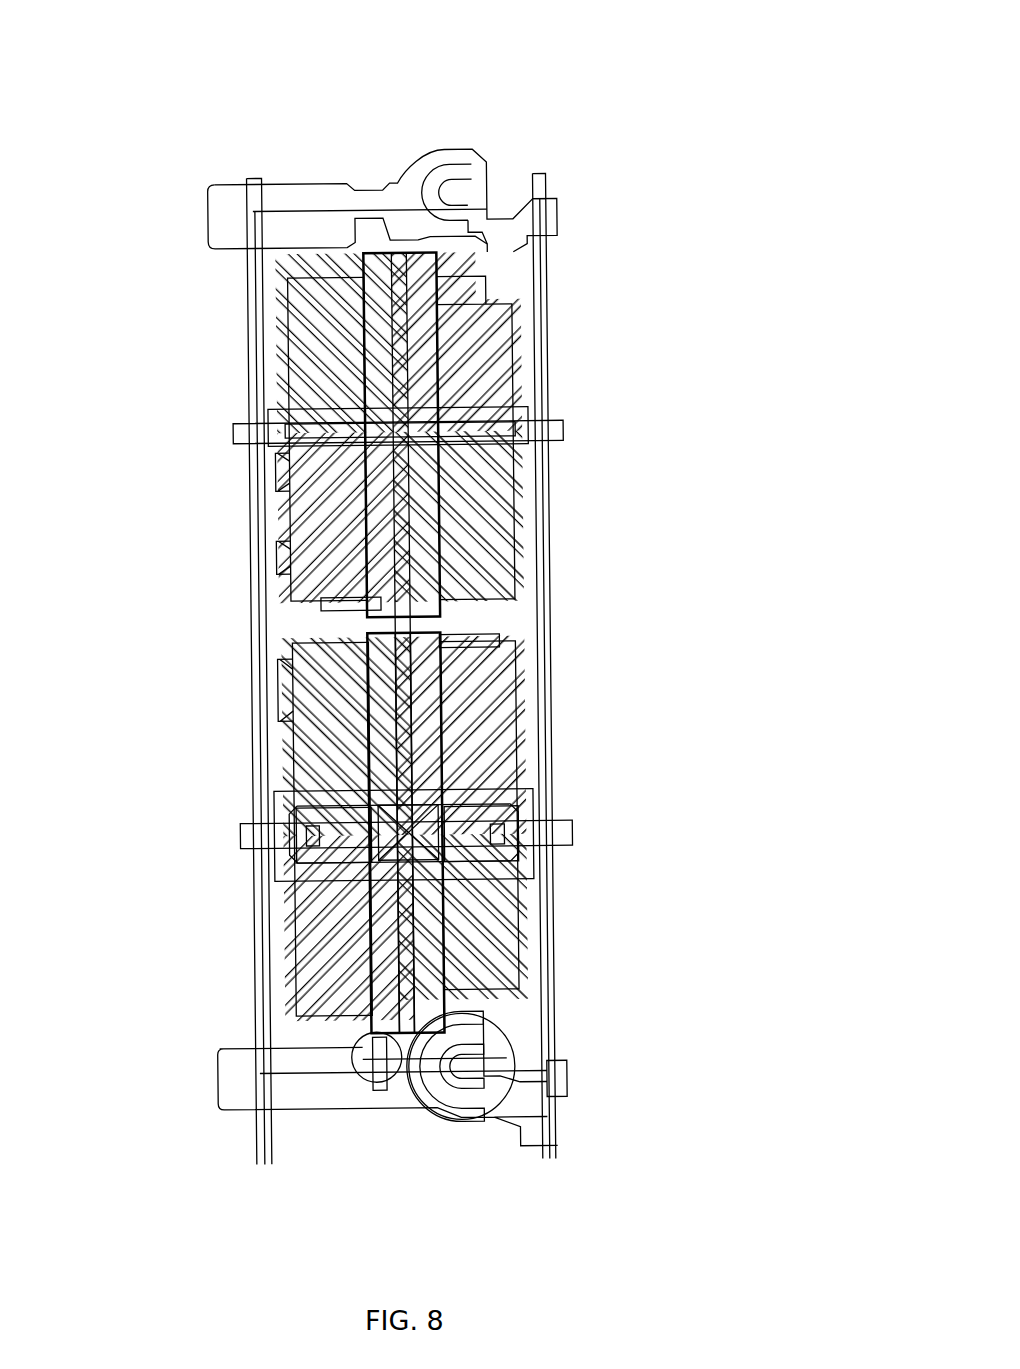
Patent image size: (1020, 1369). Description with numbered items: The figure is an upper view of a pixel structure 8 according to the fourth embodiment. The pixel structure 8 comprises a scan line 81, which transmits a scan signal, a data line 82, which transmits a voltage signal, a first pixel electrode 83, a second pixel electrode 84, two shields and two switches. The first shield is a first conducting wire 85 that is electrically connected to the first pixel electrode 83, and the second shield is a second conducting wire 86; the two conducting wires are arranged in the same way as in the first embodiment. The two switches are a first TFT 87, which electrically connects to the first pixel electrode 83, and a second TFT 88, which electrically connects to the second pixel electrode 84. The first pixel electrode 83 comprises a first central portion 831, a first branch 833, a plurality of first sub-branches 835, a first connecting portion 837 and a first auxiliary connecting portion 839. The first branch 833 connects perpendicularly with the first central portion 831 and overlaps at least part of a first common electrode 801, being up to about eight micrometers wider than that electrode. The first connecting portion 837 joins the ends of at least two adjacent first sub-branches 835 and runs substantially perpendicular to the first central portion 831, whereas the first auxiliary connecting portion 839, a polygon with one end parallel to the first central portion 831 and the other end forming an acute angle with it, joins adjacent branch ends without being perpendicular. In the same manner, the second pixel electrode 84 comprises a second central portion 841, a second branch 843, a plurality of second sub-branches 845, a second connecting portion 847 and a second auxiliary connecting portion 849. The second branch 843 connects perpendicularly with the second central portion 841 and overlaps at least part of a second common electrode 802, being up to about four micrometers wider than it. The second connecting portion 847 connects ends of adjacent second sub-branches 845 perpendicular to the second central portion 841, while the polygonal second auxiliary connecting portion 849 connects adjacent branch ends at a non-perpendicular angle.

The pixel structure 8 is at (534, 84).
The scan line 81 is at (570, 1080).
The data line 82 is at (552, 572).
The first pixel electrode 83 is at (519, 596).
The second pixel electrode 84 is at (284, 1030).
The first conducting wire 85 is at (399, 317).
The second conducting wire 86 is at (412, 985).
The first TFT 87 is at (368, 1083).
The second TFT 88 is at (465, 1120).
The first common electrode 801 is at (560, 428).
The second common electrode 802 is at (564, 826).
The first central portion 831 is at (436, 370).
The first branch 833 is at (292, 485).
The first sub-branches 835 is at (475, 500).
The first connecting portion 837 is at (337, 608).
The first auxiliary connecting portion 839 is at (301, 590).
The second central portion 841 is at (401, 962).
The second branch 843 is at (466, 785).
The second sub-branches 845 is at (343, 773).
The second connecting portion 847 is at (463, 658).
The second auxiliary connecting portion 849 is at (287, 683).